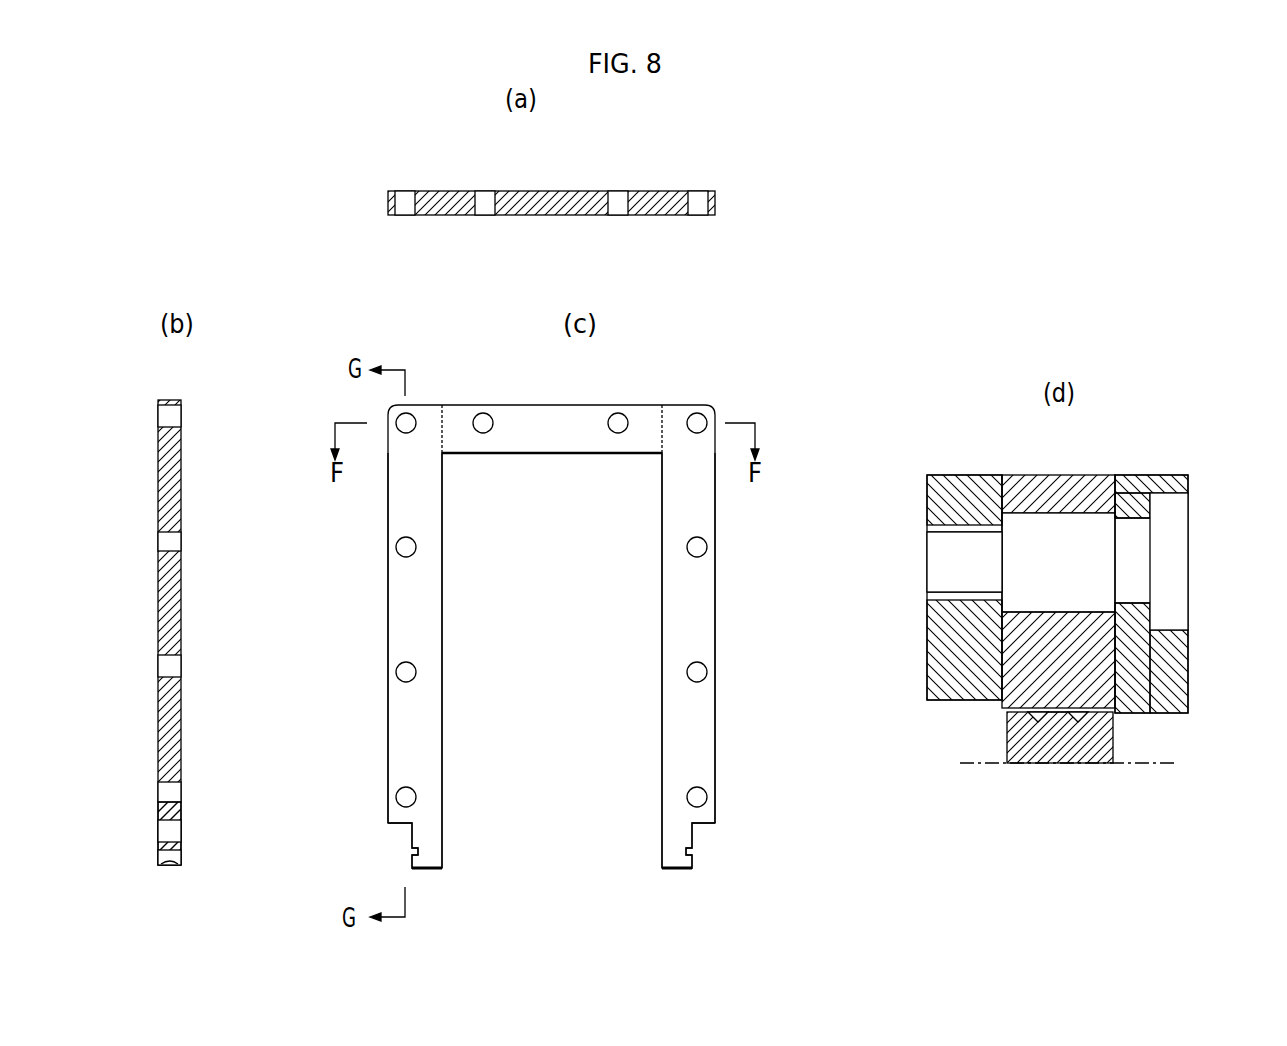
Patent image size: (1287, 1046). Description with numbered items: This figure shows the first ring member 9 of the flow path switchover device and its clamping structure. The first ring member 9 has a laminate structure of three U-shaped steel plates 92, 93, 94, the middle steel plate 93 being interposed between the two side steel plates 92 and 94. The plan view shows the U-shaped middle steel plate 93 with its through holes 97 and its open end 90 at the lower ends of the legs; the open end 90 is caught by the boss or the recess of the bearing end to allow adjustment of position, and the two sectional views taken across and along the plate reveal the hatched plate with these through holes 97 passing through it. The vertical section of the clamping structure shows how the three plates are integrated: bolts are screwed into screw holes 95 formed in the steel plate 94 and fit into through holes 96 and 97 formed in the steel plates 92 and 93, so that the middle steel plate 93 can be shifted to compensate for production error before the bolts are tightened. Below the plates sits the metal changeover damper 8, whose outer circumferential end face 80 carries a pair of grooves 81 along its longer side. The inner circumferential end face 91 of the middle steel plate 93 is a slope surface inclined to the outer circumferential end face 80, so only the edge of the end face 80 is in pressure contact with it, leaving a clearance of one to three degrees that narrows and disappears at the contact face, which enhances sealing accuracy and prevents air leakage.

The first ring member 9 is at (455, 589).
The middle steel plate 93 is at (640, 191).
The through hole 97 is at (618, 215).
The inner circumferential end face 91 is at (442, 737).
The open end 90 is at (168, 832).
The steel plate 94 is at (937, 510).
The screw hole 95 is at (957, 580).
The through hole 96 is at (1172, 563).
The steel plate 92 is at (1135, 487).
The changeover damper 8 is at (1057, 743).
The outer circumferential end face 80 is at (1063, 715).
The groove 81 is at (1077, 715).